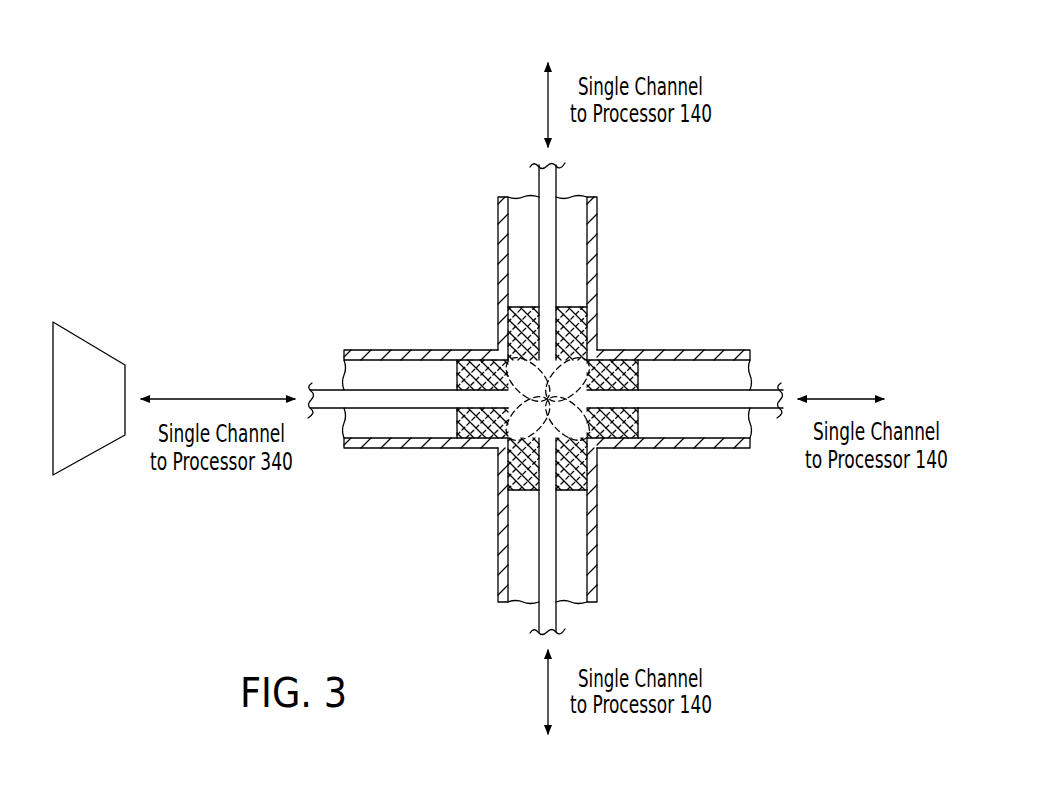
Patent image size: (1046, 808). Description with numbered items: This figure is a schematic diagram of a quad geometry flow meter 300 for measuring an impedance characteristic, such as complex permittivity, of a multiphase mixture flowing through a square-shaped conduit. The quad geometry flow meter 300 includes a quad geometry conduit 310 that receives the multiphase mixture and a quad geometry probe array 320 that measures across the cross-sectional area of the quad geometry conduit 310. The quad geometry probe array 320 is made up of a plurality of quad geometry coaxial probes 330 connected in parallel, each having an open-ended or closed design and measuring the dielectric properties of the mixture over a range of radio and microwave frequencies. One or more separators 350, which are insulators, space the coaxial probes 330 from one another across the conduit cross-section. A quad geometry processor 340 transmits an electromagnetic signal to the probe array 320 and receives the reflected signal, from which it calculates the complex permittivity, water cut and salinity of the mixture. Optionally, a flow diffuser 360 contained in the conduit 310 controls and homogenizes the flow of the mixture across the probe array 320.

The quad geometry flow meter 300 is at (802, 180).
The quad geometry conduit 310 is at (597, 237).
The quad geometry probe array 320 is at (408, 372).
The quad geometry coaxial probe 330 is at (419, 400).
The quad geometry processor 340 is at (98, 342).
The separator 350 is at (583, 460).
The flow diffuser 360 is at (568, 368).